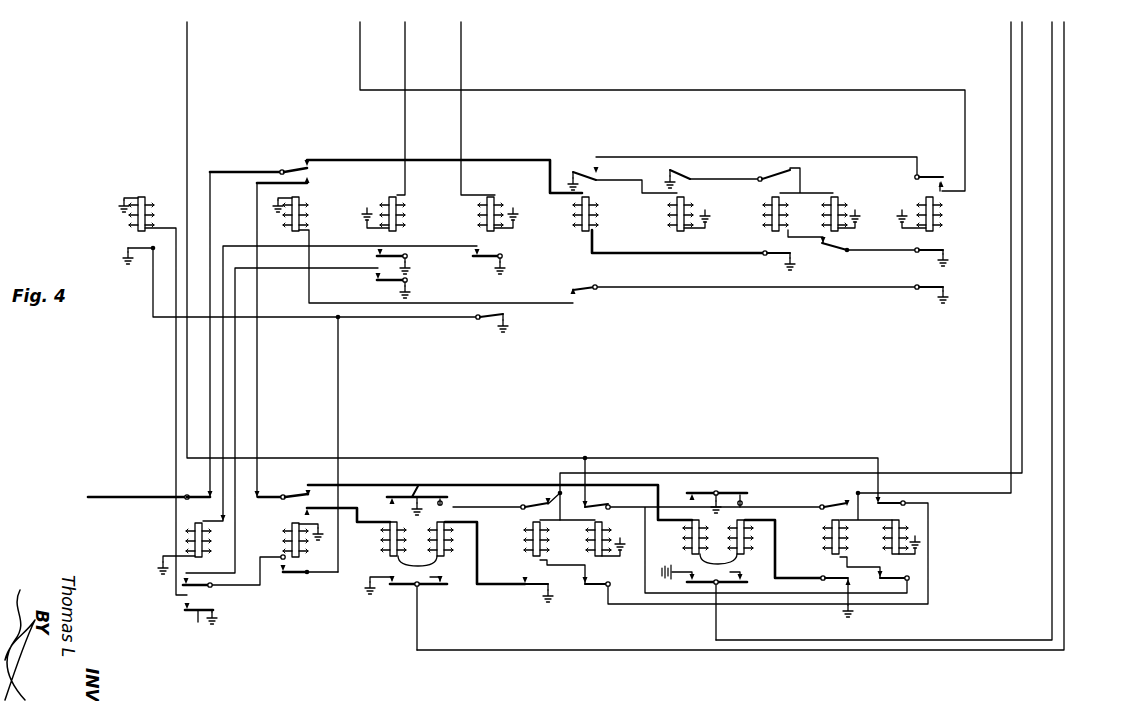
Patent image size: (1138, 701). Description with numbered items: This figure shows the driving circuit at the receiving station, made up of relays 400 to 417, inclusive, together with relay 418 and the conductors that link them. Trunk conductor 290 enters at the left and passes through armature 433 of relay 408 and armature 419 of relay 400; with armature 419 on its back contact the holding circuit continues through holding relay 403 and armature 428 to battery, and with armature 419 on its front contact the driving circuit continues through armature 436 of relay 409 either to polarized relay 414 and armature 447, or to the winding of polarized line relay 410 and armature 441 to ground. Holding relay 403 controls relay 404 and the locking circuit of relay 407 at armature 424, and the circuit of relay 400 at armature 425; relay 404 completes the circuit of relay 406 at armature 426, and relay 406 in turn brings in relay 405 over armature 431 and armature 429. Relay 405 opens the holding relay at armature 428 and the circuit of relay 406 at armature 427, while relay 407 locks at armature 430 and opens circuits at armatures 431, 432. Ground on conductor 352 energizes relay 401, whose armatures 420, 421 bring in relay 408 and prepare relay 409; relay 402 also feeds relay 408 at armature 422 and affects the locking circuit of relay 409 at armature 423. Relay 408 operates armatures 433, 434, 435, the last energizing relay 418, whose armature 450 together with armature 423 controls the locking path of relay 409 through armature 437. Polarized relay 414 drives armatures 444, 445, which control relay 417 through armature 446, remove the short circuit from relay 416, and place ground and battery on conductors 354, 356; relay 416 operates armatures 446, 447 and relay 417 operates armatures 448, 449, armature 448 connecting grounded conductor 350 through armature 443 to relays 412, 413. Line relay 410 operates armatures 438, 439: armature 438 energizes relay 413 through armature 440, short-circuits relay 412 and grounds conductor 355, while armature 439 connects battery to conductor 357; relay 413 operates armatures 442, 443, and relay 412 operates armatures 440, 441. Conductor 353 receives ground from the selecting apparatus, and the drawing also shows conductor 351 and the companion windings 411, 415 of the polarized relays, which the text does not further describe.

The trunk conductor 290 is at (137, 487).
The grounded conductor 350 is at (187, 40).
The conductor 351 is at (360, 37).
The conductor 352 is at (405, 37).
The conductor 353 is at (461, 37).
The conductor 354 is at (1011, 32).
The conductor 355 is at (1022, 54).
The conductor 356 is at (1052, 33).
The conductor 357 is at (1064, 55).
The relay 400 is at (306, 195).
The relay 401 is at (402, 197).
The relay 402 is at (494, 197).
The holding relay 403 is at (600, 208).
The relay 404 is at (697, 198).
The relay 405 is at (766, 222).
The relay 406 is at (840, 198).
The relay 407 is at (940, 208).
The relay 408 is at (184, 541).
The relay 409 is at (289, 521).
The polarized line relay 410 is at (390, 541).
The relay 411 is at (444, 520).
The relay 412 is at (529, 542).
The relay 413 is at (589, 539).
The polarized relay 414 is at (694, 542).
The relay 415 is at (742, 521).
The relay 416 is at (827, 540).
The relay 417 is at (885, 537).
The relay 418 is at (145, 197).
The armature 419 is at (288, 165).
The armature 420 is at (398, 250).
The armature 421 is at (400, 275).
The armature 422 is at (495, 250).
The armature 423 is at (505, 320).
The armature 424 is at (580, 165).
The armature 425 is at (585, 284).
The armature 426 is at (694, 177).
The armature 427 is at (780, 168).
The armature 428 is at (772, 265).
The armature 429 is at (840, 258).
The armature 430 is at (931, 174).
The armature 431 is at (941, 248).
The armature 432 is at (941, 285).
The armature 433 is at (200, 500).
The armature 434 is at (200, 588).
The armature 435 is at (201, 629).
The armature 436 is at (294, 494).
The armature 437 is at (298, 580).
The armature 438 is at (417, 482).
The armature 439 is at (405, 590).
The armature 440 is at (531, 505).
The armature 441 is at (538, 586).
The armature 442 is at (598, 500).
The armature 443 is at (600, 592).
The armature 444 is at (716, 490).
The armature 445 is at (712, 584).
The armature 446 is at (833, 505).
The armature 447 is at (835, 572).
The armature 448 is at (895, 495).
The armature 449 is at (895, 572).
The armature 450 is at (127, 247).